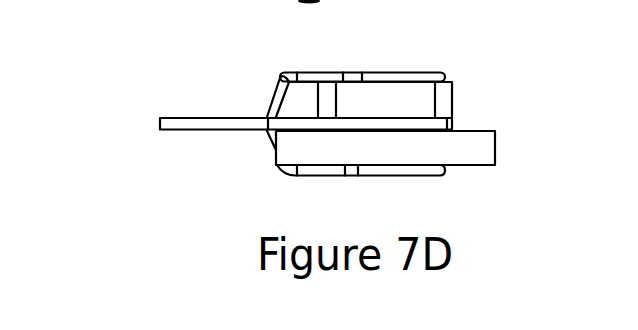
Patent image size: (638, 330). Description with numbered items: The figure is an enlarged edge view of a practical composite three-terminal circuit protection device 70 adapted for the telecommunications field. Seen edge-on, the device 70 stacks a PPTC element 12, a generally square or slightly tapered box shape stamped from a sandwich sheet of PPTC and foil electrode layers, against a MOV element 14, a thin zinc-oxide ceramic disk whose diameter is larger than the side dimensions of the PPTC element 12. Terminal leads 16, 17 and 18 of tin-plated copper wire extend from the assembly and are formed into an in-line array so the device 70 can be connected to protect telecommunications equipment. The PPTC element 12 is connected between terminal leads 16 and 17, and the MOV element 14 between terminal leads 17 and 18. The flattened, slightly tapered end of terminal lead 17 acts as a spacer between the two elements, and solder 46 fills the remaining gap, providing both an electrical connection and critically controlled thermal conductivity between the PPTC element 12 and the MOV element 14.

The PPTC element 12 is at (395, 100).
The MOV element 14 is at (472, 146).
The terminal lead 16 is at (171, 101).
The terminal lead 17 is at (171, 101).
The terminal lead 18 is at (225, 126).
The solder 46 is at (452, 126).
The composite three-terminal circuit protection device 70 is at (305, 123).